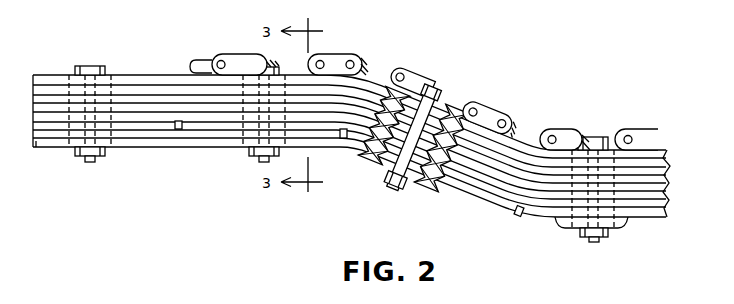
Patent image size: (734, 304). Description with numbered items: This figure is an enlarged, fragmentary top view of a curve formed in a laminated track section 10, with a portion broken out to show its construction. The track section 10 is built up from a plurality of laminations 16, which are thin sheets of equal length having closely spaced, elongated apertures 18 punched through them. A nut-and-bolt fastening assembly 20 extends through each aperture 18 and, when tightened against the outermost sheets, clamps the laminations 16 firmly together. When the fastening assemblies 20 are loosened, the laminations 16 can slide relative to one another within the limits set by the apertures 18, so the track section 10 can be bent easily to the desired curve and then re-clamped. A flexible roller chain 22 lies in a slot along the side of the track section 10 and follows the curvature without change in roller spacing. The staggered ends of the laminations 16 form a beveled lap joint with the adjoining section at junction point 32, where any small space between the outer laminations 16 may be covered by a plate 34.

The track section 10 is at (365, 168).
The laminations 16 is at (650, 163).
The elongated apertures 18 is at (410, 107).
The fastening assembly 20 is at (265, 158).
The flexible roller chain 22 is at (541, 94).
The junction point 32 is at (179, 129).
The plate 34 is at (558, 227).